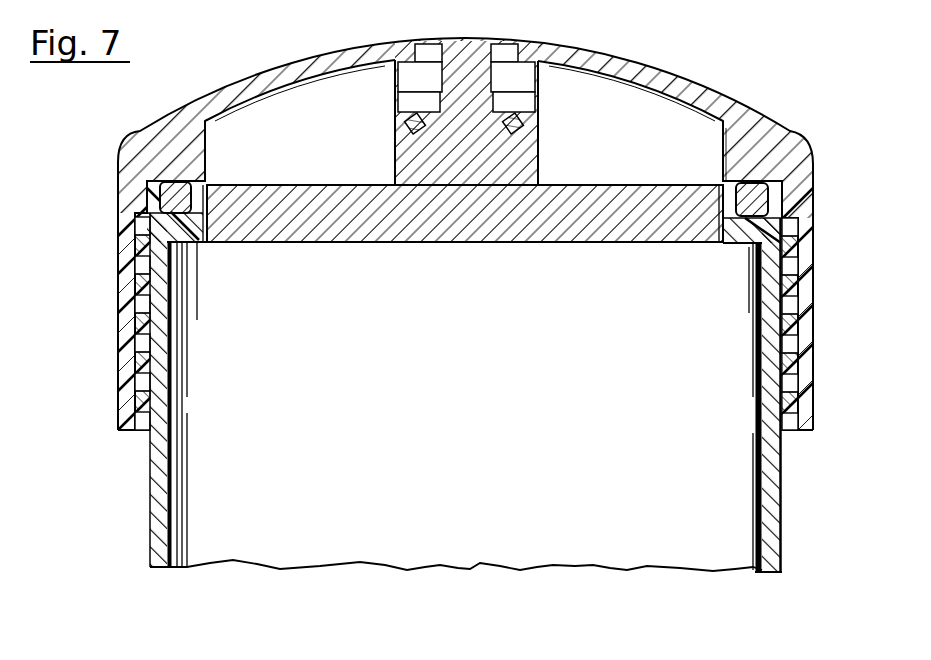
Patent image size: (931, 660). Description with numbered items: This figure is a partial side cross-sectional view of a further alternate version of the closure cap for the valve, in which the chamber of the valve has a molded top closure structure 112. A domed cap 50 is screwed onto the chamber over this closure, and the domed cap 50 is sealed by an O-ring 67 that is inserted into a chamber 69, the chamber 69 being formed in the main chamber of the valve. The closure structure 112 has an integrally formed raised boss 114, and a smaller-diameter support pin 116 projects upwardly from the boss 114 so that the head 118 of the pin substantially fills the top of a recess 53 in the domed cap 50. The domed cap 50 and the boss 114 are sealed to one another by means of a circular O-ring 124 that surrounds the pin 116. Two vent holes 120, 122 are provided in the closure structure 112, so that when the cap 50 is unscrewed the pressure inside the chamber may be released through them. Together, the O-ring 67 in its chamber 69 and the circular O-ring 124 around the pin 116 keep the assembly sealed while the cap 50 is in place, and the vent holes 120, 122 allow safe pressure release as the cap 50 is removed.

The domed cap 50 is at (694, 72).
The recess 53 is at (505, 85).
The O-ring 67 is at (762, 183).
The chamber 69 is at (734, 222).
The molded top closure structure 112 is at (347, 246).
The raised boss 114 is at (394, 163).
The support pin 116 is at (467, 57).
The head 118 is at (442, 39).
The vent hole 120 is at (448, 379).
The vent hole 122 is at (725, 395).
The circular O-ring 124 is at (404, 121).